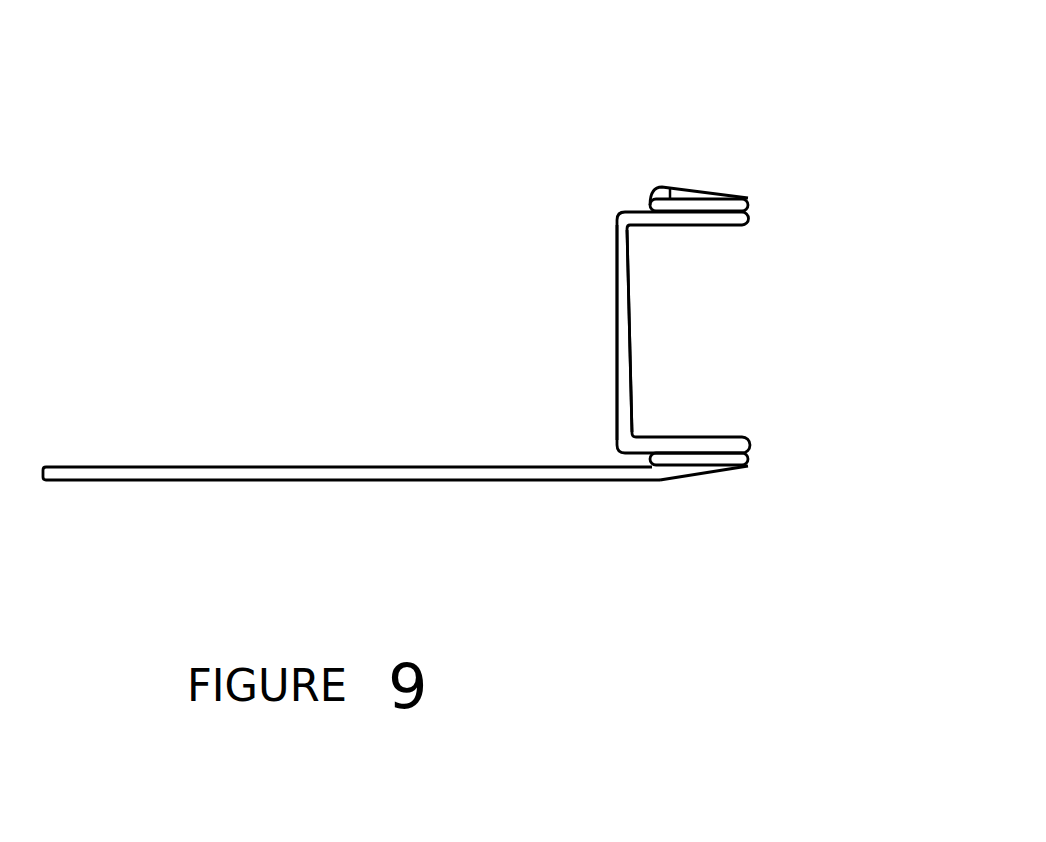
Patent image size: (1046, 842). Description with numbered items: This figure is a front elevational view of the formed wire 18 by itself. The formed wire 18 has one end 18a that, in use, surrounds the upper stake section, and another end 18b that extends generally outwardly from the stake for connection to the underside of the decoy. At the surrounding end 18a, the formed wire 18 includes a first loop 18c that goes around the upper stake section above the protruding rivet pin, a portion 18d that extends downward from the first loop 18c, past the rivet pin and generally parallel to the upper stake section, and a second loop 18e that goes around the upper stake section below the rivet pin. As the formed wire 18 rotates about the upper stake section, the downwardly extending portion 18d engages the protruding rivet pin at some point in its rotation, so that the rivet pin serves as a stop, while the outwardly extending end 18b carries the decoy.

The formed wire 18 is at (368, 165).
The end surrounding the upper stake section 18a is at (717, 327).
The outwardly extending end 18b is at (337, 467).
The first loop 18c is at (668, 187).
The downwardly extending portion 18d is at (615, 309).
The second loop 18e is at (718, 468).